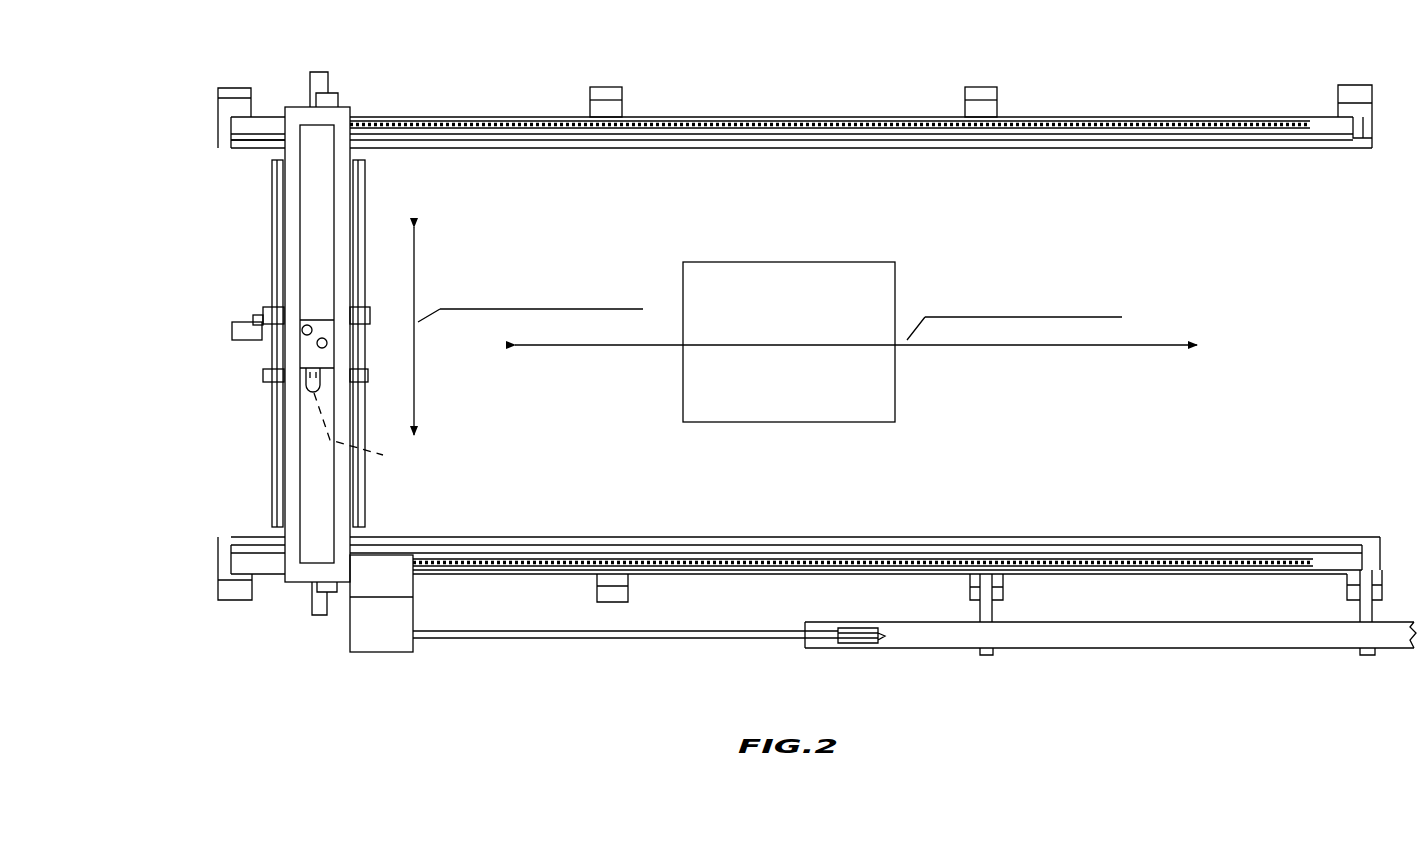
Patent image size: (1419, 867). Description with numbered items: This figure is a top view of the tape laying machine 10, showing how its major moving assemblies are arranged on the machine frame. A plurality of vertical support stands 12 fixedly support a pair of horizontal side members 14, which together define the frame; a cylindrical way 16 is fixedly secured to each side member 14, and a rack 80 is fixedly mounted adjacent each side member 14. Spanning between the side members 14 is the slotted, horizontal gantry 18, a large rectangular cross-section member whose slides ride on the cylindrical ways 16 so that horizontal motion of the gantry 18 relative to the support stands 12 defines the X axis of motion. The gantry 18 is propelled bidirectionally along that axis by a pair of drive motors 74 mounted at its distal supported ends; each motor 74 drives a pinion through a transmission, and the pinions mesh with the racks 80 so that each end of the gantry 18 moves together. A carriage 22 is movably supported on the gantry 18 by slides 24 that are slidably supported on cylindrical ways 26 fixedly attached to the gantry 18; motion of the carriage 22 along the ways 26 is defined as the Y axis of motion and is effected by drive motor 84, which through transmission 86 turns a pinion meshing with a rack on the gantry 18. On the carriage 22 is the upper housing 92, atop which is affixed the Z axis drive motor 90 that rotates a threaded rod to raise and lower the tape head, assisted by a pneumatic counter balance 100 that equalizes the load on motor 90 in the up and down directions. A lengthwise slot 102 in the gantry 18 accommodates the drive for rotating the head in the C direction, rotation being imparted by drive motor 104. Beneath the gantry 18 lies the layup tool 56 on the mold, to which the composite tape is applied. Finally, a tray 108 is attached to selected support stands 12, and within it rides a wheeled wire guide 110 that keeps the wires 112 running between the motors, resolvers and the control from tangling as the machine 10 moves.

The tape laying machine 10 is at (742, 695).
The vertical support stands 12 is at (228, 86).
The horizontal side members 14 is at (786, 117).
The cylindrical way 16 is at (783, 141).
The gantry 18 is at (342, 228).
The carriage 22 is at (262, 386).
The slides 24 is at (262, 310).
The cylindrical ways 26 is at (360, 290).
The layup tool 56 is at (810, 275).
The drive motors 74 is at (331, 75).
The racks 80 is at (468, 118).
The drive motor 84 is at (227, 332).
The transmission 86 is at (253, 318).
The drive motor 90 is at (308, 324).
The upper housing 92 is at (340, 358).
The pneumatic counter balance 100 is at (365, 418).
The lengthwise slot 102 is at (302, 232).
The drive motor 104 is at (330, 343).
The tray 108 is at (1166, 637).
The wheeled wire guide 110 is at (862, 645).
The wires 112 is at (658, 633).